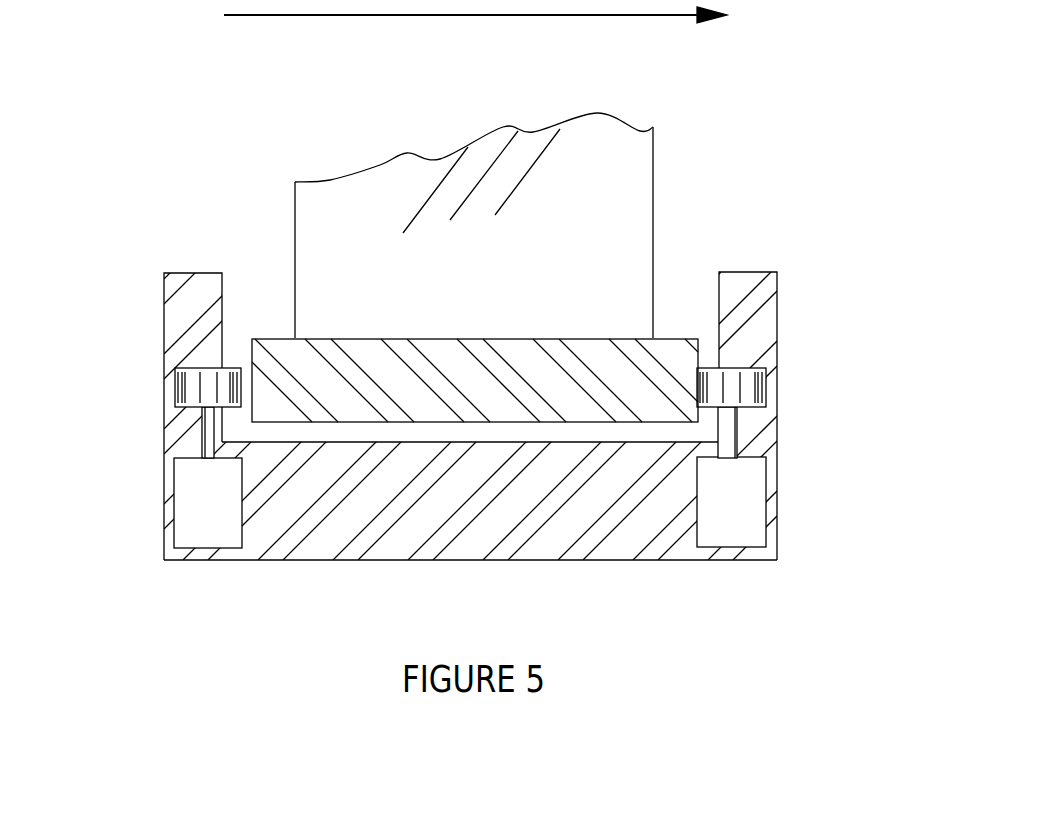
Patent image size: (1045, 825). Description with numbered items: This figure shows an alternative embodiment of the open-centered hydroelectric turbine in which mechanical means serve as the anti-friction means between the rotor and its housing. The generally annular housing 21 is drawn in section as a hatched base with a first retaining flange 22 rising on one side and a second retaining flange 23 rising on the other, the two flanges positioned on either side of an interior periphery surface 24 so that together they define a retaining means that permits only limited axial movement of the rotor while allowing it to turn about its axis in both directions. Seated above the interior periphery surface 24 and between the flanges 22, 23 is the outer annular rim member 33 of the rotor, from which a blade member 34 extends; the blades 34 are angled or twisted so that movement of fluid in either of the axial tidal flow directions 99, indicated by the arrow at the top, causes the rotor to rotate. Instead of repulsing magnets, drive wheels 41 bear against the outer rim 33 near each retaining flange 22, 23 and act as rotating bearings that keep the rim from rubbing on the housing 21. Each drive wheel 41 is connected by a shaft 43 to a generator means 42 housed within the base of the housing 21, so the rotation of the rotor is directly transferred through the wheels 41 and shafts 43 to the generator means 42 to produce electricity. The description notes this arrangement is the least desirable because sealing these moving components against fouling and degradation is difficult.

The axial tidal flow directions 99 is at (308, 21).
The blade members 34 is at (637, 171).
The outer annular rim member 33 is at (677, 333).
The first retaining flange 22 is at (163, 318).
The second retaining flange 23 is at (777, 312).
The drive wheels 41 is at (187, 393).
The shafts 43 is at (203, 435).
The generator means 42 is at (203, 517).
The interior periphery surface 24 is at (340, 432).
The housing 21 is at (603, 562).